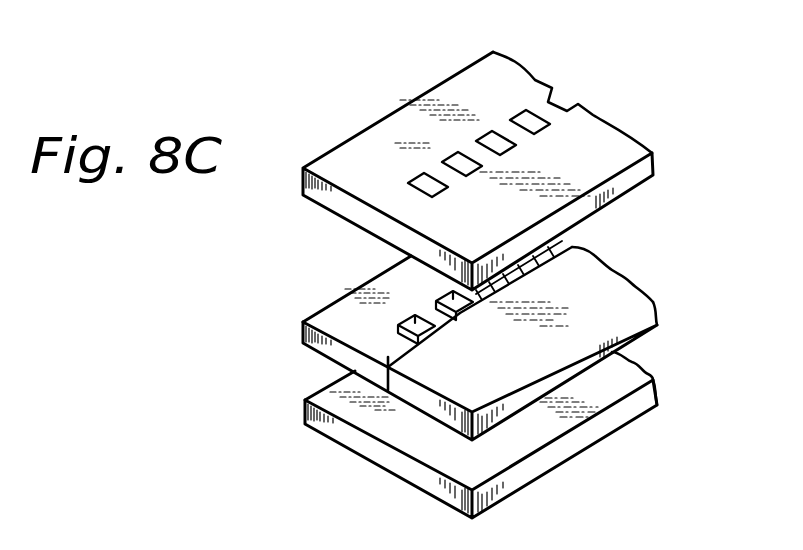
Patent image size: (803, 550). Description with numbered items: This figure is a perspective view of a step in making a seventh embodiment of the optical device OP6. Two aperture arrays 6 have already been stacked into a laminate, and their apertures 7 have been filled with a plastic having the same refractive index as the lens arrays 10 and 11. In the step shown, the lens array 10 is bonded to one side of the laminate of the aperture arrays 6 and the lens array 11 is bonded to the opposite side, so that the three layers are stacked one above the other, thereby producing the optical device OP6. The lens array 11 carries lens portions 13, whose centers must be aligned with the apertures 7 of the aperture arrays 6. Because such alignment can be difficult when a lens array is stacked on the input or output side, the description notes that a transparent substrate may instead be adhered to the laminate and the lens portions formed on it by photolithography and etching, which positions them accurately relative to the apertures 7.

The lens array 10 is at (440, 450).
The aperture array 6 is at (370, 283).
The apertures 7 is at (403, 318).
The lens array 11 is at (382, 132).
The lens portions 13 is at (490, 126).
The optical device OP6 is at (632, 261).